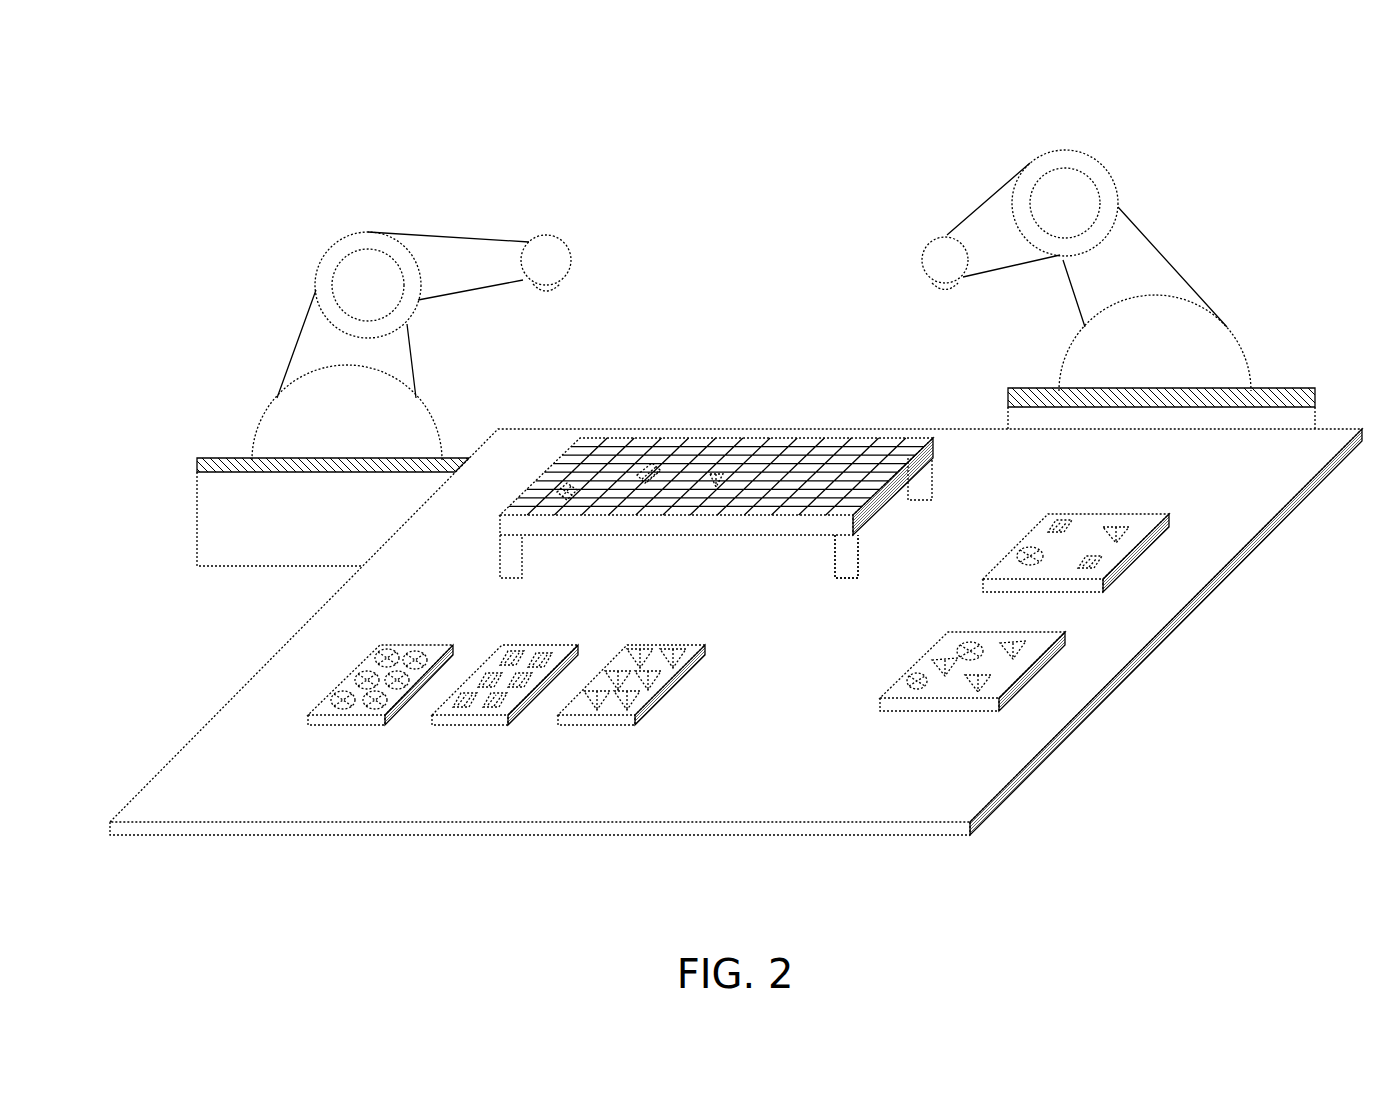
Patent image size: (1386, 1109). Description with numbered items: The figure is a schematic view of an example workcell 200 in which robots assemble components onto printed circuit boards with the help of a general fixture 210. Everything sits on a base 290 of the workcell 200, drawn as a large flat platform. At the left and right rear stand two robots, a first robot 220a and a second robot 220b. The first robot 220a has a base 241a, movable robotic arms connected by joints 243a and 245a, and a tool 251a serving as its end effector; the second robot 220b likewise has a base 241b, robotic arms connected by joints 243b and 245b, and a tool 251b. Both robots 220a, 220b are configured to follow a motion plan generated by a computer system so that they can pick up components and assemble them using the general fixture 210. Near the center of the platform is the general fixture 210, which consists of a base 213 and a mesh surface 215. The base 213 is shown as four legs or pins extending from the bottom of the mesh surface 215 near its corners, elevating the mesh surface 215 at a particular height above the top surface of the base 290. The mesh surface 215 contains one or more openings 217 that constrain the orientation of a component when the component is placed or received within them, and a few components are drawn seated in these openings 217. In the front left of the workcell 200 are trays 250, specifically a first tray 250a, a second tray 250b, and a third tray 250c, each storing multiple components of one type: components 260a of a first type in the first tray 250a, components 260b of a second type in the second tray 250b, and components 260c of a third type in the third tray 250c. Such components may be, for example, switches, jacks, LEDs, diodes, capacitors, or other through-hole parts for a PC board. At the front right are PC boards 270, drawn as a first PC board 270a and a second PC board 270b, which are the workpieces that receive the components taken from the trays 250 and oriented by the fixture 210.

The workcell 200 is at (215, 109).
The general fixture 210 is at (497, 486).
The base 213 is at (835, 553).
The mesh surface 215 is at (647, 437).
The openings 217 is at (803, 460).
The first robot 220a is at (315, 207).
The second robot 220b is at (1050, 133).
The base 241a is at (333, 465).
The base 241b is at (1161, 362).
The joint 243a is at (548, 260).
The joint 243b is at (947, 260).
The joint 245a is at (368, 285).
The joint 245b is at (1065, 203).
The tool 251a is at (550, 298).
The tool 251b is at (947, 290).
The trays 250 is at (355, 752).
The first tray 250a is at (377, 645).
The second tray 250b is at (513, 645).
The third tray 250c is at (637, 645).
The components of a first type 260a is at (343, 697).
The components of a second type 260b is at (493, 700).
The components of a third type 260c is at (627, 700).
The PC boards 270 is at (1195, 543).
The PC board 270a is at (1089, 514).
The PC board 270b is at (926, 704).
The base 290 is at (1231, 582).